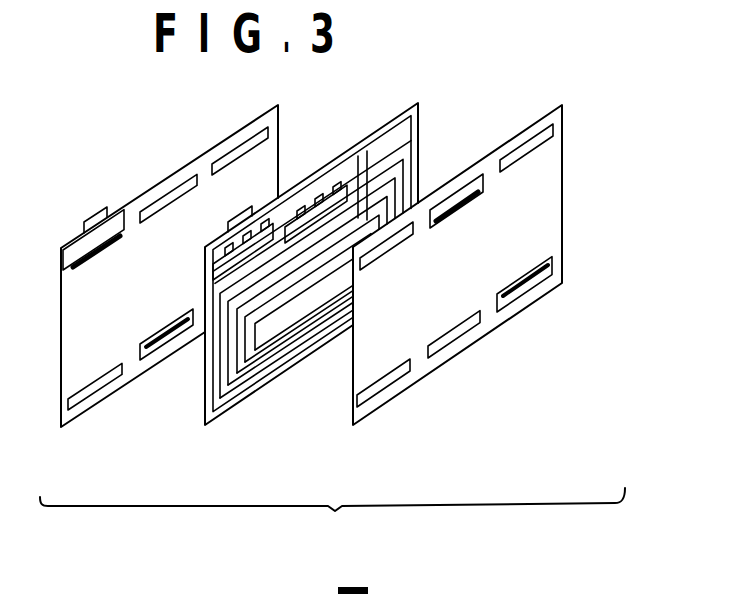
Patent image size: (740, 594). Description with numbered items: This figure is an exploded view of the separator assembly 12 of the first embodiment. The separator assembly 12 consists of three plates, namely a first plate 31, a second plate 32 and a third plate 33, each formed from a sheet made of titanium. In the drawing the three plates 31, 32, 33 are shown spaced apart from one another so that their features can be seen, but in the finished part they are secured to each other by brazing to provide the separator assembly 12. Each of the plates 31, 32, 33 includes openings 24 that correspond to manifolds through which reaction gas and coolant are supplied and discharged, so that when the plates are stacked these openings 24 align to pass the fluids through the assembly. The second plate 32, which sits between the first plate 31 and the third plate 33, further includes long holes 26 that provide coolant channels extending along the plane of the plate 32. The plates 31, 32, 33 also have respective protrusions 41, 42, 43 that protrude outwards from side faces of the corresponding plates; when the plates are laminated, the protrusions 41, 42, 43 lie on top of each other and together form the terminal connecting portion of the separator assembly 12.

The separator assembly 12 is at (332, 517).
The openings 24 is at (148, 350).
The long holes 26 is at (405, 150).
The first plate 31 is at (546, 329).
The second plate 32 is at (230, 428).
The third plate 33 is at (84, 428).
The protrusion 41 is at (422, 192).
The protrusion 42 is at (252, 208).
The protrusion 43 is at (103, 208).